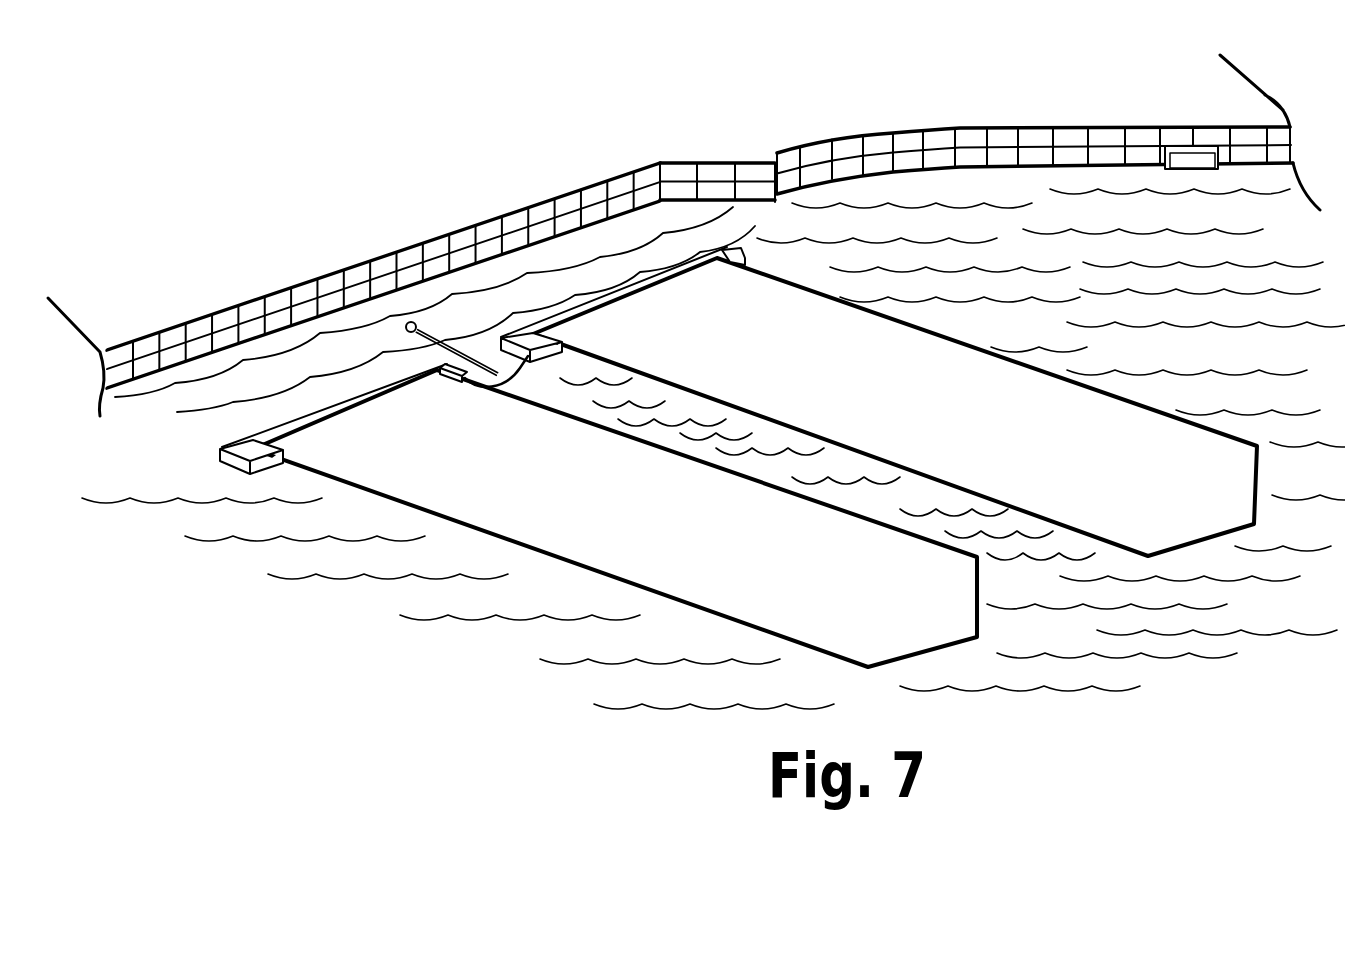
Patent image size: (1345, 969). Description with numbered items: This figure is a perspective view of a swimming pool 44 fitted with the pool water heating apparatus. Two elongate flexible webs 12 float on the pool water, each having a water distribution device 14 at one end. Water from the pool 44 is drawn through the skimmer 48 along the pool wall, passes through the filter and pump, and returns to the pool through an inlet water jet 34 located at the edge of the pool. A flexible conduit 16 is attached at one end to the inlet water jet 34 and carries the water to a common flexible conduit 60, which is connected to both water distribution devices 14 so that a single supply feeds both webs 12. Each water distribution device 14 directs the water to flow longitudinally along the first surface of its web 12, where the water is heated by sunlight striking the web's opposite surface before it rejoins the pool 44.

The elongate flexible web 12 is at (857, 401).
The water distribution device 14 is at (750, 260).
The flexible conduit 16 is at (455, 343).
The inlet water jet 34 is at (402, 334).
The pool 44 is at (907, 136).
The skimmer 48 is at (1186, 148).
The common flexible conduit 60 is at (498, 390).